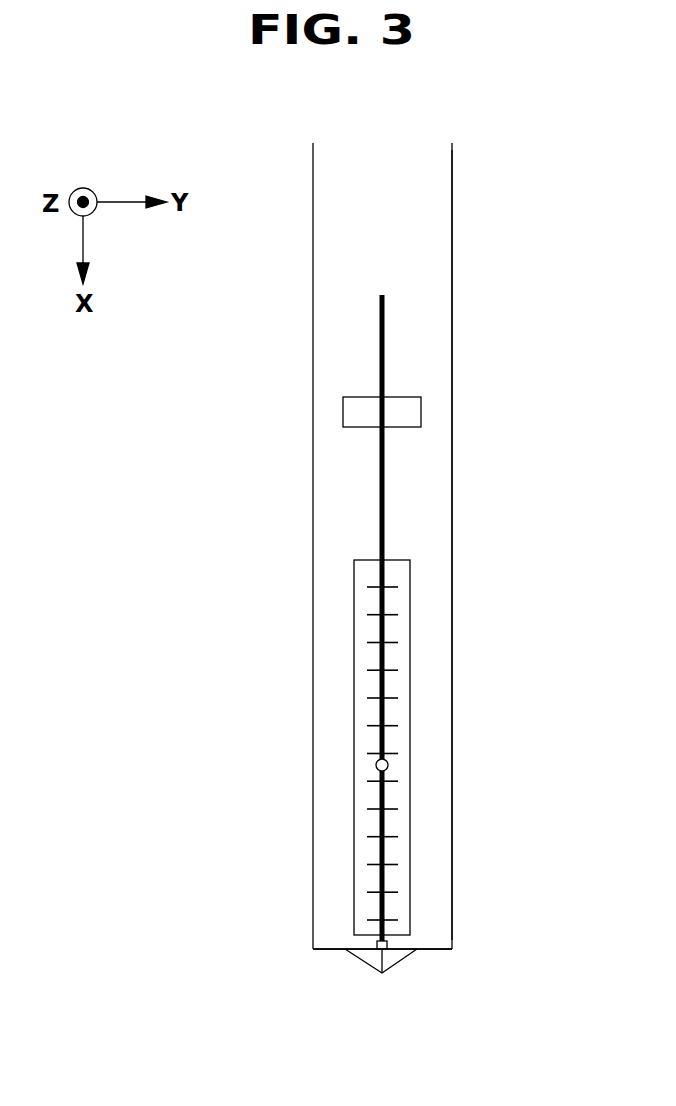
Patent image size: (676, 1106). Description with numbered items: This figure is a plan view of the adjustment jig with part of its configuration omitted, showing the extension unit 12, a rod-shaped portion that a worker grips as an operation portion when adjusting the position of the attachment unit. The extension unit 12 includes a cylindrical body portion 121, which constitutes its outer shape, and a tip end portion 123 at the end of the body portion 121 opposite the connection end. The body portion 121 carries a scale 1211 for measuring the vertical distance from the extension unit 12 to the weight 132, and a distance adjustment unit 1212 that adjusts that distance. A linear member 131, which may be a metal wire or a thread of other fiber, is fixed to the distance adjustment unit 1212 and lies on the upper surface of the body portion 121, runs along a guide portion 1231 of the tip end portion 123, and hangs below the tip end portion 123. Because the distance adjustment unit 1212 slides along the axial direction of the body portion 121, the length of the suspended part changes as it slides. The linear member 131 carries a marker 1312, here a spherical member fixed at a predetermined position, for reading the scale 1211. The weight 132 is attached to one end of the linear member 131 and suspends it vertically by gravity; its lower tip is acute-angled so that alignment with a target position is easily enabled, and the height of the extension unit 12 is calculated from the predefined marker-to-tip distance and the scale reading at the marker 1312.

The extension unit 12 is at (500, 198).
The body portion 121 is at (452, 300).
The scale 1211 is at (353, 718).
The distance adjustment unit 1212 is at (421, 411).
The tip end portion 123 is at (327, 952).
The guide portion 1231 is at (378, 945).
The linear member 131 is at (385, 508).
The marker 1312 is at (388, 765).
The weight 132 is at (400, 961).